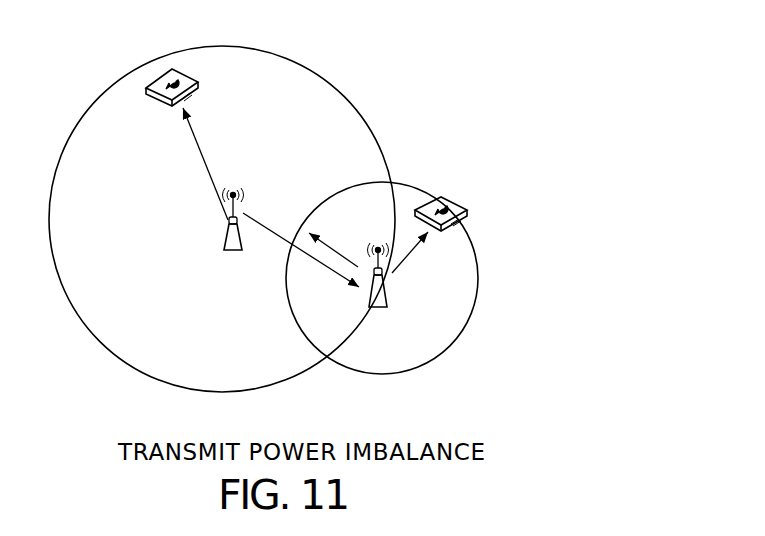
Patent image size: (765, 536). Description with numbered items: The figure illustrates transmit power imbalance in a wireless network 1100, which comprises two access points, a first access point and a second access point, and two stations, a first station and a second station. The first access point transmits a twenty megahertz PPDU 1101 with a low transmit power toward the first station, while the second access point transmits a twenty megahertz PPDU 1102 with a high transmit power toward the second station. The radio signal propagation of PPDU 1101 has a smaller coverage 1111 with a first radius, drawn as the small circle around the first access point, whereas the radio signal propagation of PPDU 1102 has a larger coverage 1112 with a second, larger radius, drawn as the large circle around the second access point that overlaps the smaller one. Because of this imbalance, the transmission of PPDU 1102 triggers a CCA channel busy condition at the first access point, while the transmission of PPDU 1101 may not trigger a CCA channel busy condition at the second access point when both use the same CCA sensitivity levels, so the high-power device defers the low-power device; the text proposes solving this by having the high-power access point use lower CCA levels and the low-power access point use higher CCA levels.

The wireless network 1100 is at (647, 74).
The 20 MHz PPDU 1101 is at (340, 253).
The 20 MHz PPDU 1102 is at (319, 264).
The smaller coverage 1111 is at (459, 327).
The larger coverage 1112 is at (183, 328).